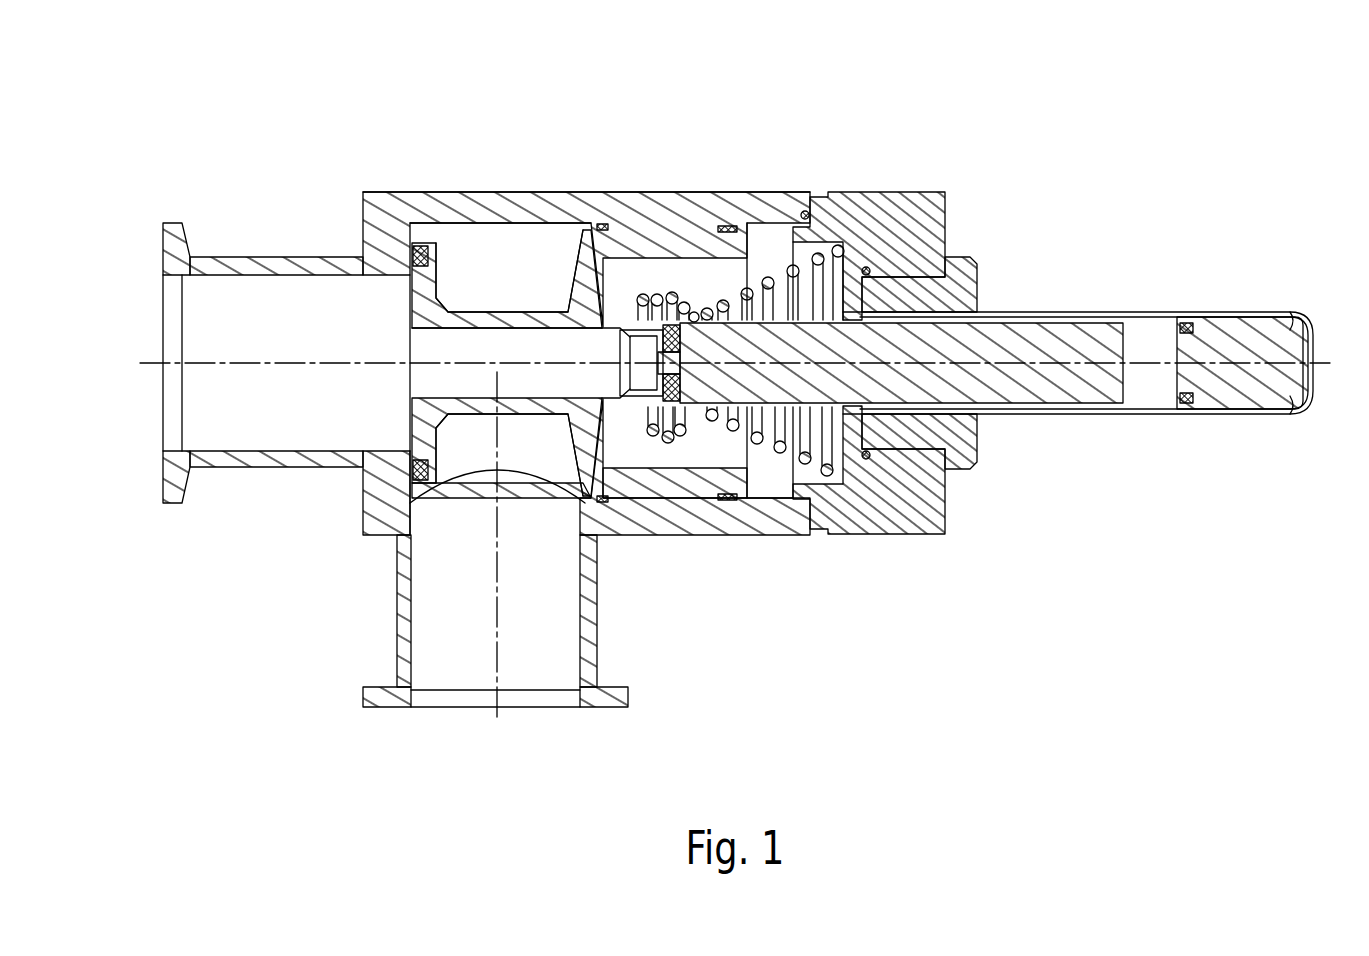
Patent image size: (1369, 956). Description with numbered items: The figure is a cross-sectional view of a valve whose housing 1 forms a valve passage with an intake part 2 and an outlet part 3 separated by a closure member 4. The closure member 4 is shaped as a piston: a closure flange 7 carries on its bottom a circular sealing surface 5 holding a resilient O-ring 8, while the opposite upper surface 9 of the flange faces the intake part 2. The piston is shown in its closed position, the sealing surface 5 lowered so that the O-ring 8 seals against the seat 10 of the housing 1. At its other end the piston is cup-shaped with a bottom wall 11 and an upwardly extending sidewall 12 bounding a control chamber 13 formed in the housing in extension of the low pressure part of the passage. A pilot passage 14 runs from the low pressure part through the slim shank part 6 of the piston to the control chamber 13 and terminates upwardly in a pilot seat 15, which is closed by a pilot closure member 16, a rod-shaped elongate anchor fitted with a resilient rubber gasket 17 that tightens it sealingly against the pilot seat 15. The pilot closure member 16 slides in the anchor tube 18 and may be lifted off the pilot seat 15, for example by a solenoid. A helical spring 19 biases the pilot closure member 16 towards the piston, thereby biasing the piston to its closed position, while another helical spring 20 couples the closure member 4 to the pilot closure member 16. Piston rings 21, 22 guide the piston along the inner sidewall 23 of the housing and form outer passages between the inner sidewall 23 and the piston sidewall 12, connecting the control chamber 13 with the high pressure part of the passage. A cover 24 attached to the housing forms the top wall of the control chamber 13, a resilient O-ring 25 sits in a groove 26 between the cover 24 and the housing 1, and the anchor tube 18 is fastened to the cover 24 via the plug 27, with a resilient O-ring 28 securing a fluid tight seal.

The housing 1 is at (380, 177).
The intake part 2 is at (537, 600).
The outlet part 3 is at (230, 293).
The closure member 4 is at (495, 302).
The sealing surface 5 is at (403, 292).
The shank part 6 is at (440, 323).
The closure flange 7 is at (428, 290).
The O-ring 8 is at (405, 477).
The upper surface 9 is at (440, 430).
The seat 10 is at (412, 502).
The bottom wall 11 is at (573, 452).
The sidewall 12 is at (692, 498).
The control chamber 13 is at (775, 487).
The pilot passage 14 is at (533, 365).
The pilot seat 15 is at (656, 320).
The pilot closure member 16 is at (1040, 342).
The resilient rubber gasket 17 is at (678, 320).
The anchor tube 18 is at (1163, 310).
The helical spring 19 is at (820, 253).
The helical spring 20 is at (657, 442).
The piston ring 21 is at (601, 210).
The piston ring 22 is at (727, 222).
The inner sidewall 23 is at (520, 217).
The cover 24 is at (885, 512).
The resilient O-ring 25 is at (808, 215).
The groove 26 is at (803, 205).
The plug 27 is at (963, 440).
The resilient O-ring 28 is at (873, 268).